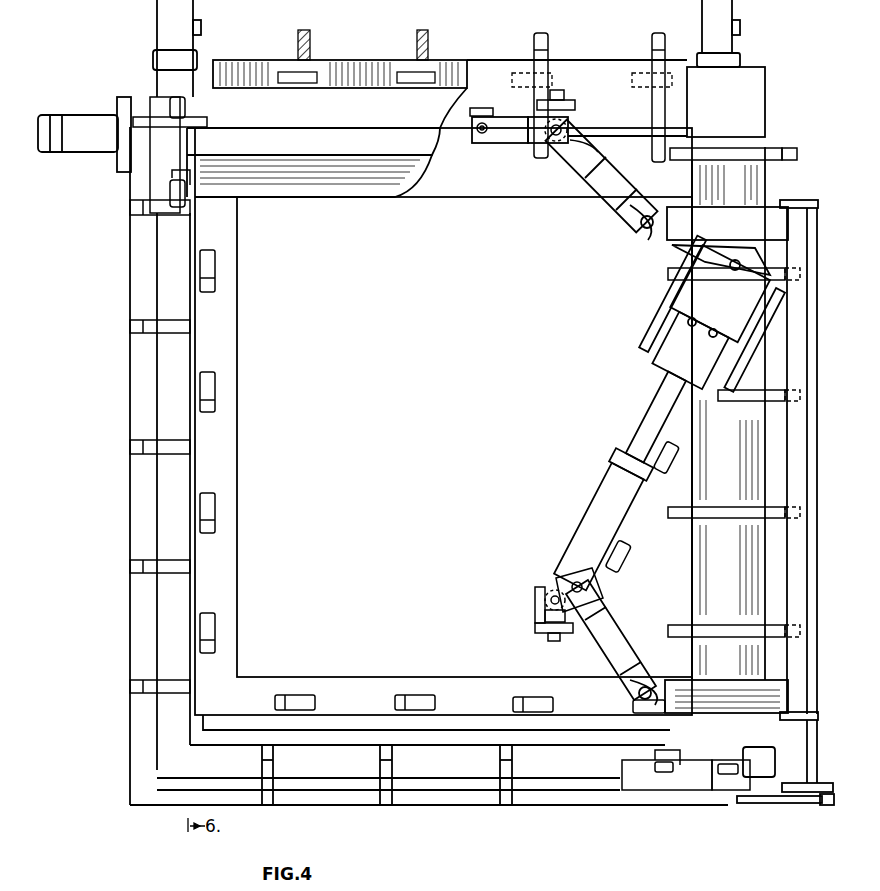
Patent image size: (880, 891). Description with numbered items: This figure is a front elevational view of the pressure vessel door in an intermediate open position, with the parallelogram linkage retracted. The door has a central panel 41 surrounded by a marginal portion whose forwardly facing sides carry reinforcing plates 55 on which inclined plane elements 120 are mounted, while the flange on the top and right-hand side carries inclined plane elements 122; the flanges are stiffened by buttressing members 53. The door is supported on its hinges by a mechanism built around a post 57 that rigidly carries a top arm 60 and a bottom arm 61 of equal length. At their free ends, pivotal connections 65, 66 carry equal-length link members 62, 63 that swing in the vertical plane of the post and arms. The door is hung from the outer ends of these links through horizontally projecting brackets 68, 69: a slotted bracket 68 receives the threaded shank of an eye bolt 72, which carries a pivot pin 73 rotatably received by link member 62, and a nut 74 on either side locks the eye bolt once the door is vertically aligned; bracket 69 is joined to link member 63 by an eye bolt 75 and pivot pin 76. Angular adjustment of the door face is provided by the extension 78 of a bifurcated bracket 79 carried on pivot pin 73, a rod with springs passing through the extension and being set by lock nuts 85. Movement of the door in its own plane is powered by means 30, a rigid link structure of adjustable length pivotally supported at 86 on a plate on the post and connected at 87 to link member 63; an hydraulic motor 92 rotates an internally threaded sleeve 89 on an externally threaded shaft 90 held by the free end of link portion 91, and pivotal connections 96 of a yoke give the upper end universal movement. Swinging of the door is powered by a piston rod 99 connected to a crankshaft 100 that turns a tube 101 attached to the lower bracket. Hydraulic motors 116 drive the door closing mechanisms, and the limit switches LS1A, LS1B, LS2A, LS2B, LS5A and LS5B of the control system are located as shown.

The power actuating means 30 is at (612, 410).
The central panel 41 is at (406, 446).
The buttressing members 53 is at (428, 45).
The reinforcing plates 55 is at (237, 476).
The post 57 is at (812, 345).
The top arm 60 is at (712, 218).
The bottom arm 61 is at (717, 690).
The link member 62 is at (590, 176).
The link member 63 is at (622, 636).
The pivotal connection 65 is at (648, 214).
The pivotal connection 66 is at (652, 684).
The bracket 68 is at (575, 104).
The bracket 69 is at (540, 630).
The eye bolt 72 is at (565, 117).
The pivot pin 73 is at (597, 150).
The nut 74 is at (560, 92).
The eye bolt 75 is at (548, 615).
The pivot pin 76 is at (552, 590).
The extension 78 is at (500, 143).
The bifurcated bracket 79 is at (540, 143).
The lock nuts 85 is at (477, 130).
The pivotal support 86 is at (737, 260).
The pivotal connection 87 is at (584, 588).
The internally threaded sleeve 89 is at (648, 410).
The externally threaded shaft 90 is at (632, 454).
The link portion 91 is at (620, 485).
The hydraulic motor 92 is at (700, 295).
The pivotal connections 96 is at (645, 344).
The piston rod 99 is at (795, 805).
The crankshaft 100 is at (817, 790).
The tube 101 is at (815, 748).
The hydraulic motor 116 is at (160, 20).
The inclined plane elements 120 is at (210, 272).
The inclined plane elements 122 is at (295, 58).
The limit switch LS1A is at (178, 110).
The limit switch LS1B is at (182, 183).
The limit switch LS2A is at (728, 775).
The limit switch LS2B is at (660, 775).
The limit switch LS5A is at (672, 458).
The limit switch LS5B is at (628, 557).